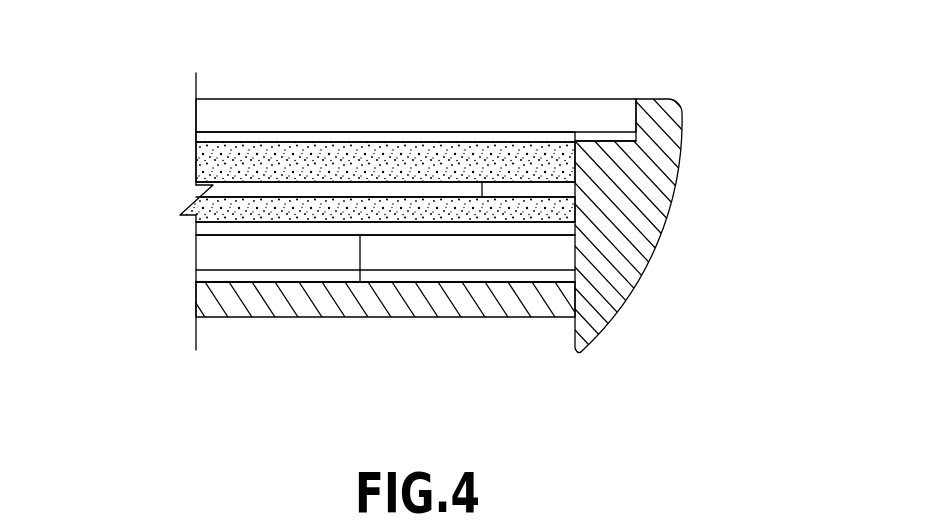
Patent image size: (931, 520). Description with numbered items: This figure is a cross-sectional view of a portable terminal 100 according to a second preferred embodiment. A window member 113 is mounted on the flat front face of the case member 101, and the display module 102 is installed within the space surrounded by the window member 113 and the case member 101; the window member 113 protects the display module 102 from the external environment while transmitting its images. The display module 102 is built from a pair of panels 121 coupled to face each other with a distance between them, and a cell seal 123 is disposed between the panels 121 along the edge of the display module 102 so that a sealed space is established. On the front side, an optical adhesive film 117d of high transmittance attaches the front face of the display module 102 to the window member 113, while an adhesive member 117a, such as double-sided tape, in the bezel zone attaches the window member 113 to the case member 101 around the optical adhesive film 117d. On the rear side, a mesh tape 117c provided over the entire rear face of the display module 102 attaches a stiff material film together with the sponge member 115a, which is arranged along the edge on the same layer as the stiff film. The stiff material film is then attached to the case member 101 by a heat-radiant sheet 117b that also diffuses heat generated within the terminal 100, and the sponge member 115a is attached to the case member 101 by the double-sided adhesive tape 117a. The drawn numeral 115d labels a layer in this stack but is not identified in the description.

The portable terminal 100 is at (282, 49).
The case member 101 is at (608, 303).
The display module 102 is at (767, 148).
The window member 113 is at (379, 98).
The sponge member 115a is at (520, 255).
The display panel portion 115d is at (203, 256).
The adhesive member 117a is at (606, 137).
The heat-radiant sheet 117b is at (265, 277).
The mesh tape 117c is at (205, 232).
The optical adhesive film 117d is at (205, 143).
The panels 121 is at (572, 161).
The cell seal 123 is at (565, 187).